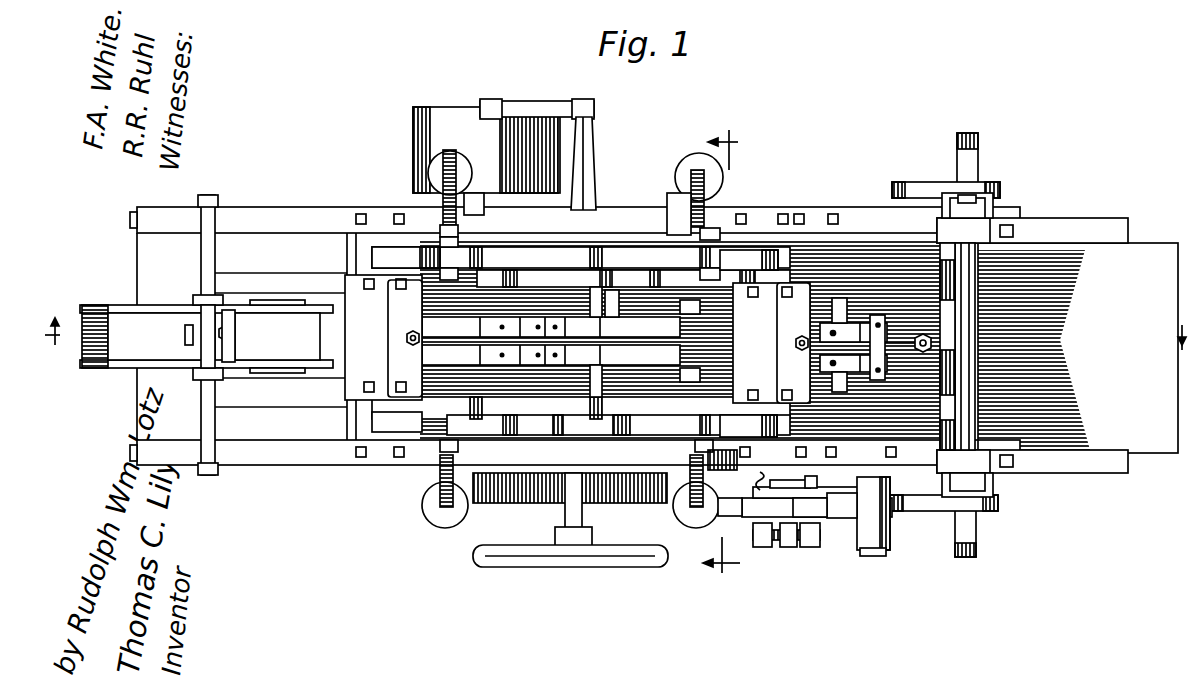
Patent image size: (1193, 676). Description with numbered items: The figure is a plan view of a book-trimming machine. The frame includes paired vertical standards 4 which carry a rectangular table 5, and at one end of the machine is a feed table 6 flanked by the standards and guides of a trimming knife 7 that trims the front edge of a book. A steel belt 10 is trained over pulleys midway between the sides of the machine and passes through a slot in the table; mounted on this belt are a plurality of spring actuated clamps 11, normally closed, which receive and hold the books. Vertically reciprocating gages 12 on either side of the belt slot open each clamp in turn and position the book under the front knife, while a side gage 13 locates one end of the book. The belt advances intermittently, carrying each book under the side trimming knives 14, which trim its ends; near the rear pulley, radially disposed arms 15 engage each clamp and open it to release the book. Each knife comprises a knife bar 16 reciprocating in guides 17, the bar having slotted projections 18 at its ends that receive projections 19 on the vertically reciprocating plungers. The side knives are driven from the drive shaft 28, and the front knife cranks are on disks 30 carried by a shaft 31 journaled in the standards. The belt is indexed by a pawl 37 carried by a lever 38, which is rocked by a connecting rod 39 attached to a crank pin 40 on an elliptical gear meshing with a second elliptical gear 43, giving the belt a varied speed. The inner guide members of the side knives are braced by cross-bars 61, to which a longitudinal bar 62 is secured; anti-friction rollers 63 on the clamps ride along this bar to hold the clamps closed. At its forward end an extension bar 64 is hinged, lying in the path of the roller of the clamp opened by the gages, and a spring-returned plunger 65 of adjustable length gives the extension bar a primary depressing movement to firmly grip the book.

The vertical standards 4 is at (611, 337).
The rectangular table 5 is at (721, 350).
The feed table 6 is at (1150, 252).
The trimming knife 7 is at (985, 230).
The steel belt 10 is at (240, 322).
The spring actuated clamps 11 is at (888, 340).
The gages 12 is at (868, 322).
The side gage 13 is at (942, 258).
The side trimming knives 14 is at (578, 270).
The radially disposed arms 15 is at (326, 308).
The knife bar 16 is at (508, 299).
The guides 17 is at (548, 318).
The projections 18 is at (378, 252).
The projections 19 is at (868, 300).
The drive shaft 28 is at (585, 518).
The disks 30 is at (910, 188).
The shaft 31 is at (858, 506).
The pawl 37 is at (860, 522).
The lever 38 is at (812, 548).
The connecting rod 39 is at (788, 548).
The crank pin 40 is at (760, 548).
The second elliptical gear 43 is at (724, 516).
The cross-bars 61 is at (392, 353).
The longitudinal bar 62 is at (636, 325).
The anti-friction rollers 63 is at (233, 333).
The extension bar 64 is at (915, 348).
The plunger 65 is at (786, 480).